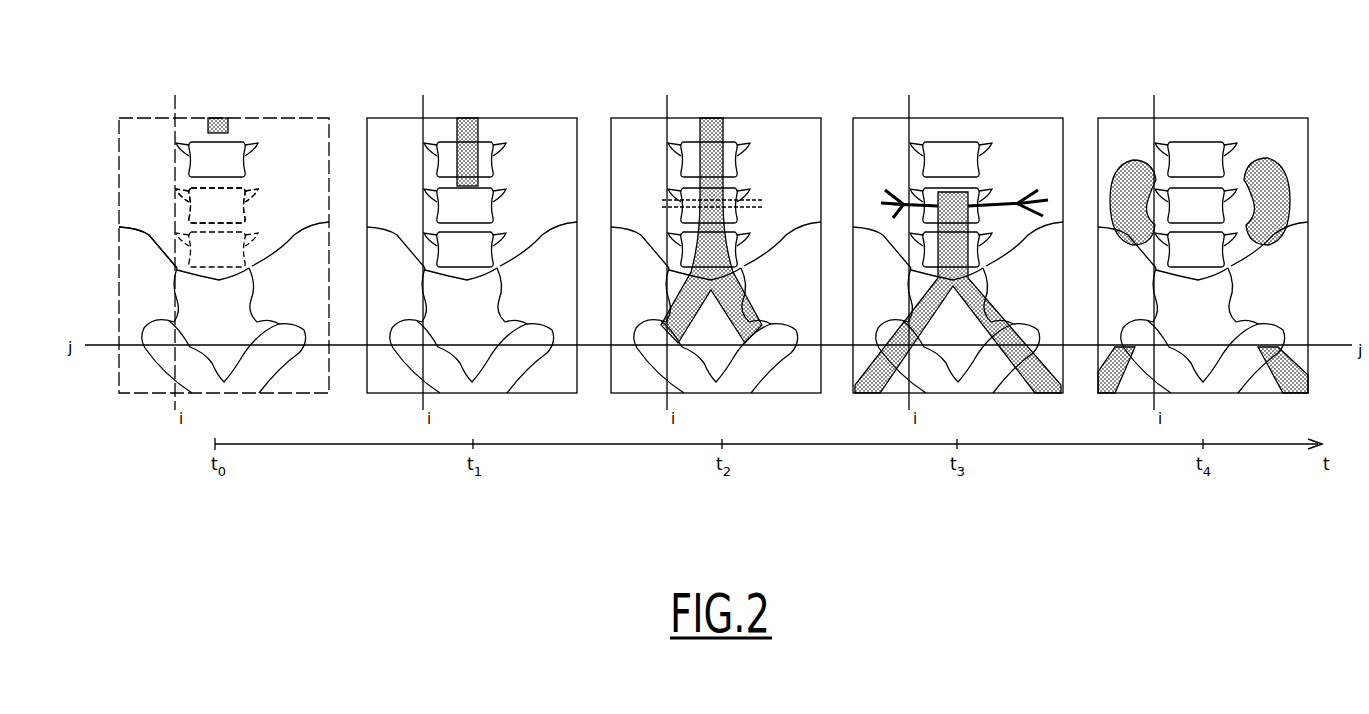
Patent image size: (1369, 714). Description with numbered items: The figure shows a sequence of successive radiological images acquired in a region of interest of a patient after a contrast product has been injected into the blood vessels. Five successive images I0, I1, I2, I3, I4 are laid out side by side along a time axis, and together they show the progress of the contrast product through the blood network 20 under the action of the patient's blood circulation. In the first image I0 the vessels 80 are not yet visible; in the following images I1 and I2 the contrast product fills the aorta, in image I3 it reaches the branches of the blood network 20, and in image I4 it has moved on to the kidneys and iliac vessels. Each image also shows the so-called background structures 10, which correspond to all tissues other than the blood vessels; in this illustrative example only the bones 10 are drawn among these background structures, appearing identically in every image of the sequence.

The background structures 10 is at (205, 212).
The vessels 80 is at (716, 197).
The blood network 20 is at (964, 343).
The image I0 is at (288, 142).
The image I1 is at (538, 150).
The image I2 is at (725, 228).
The image I3 is at (963, 267).
The image I4 is at (1125, 145).